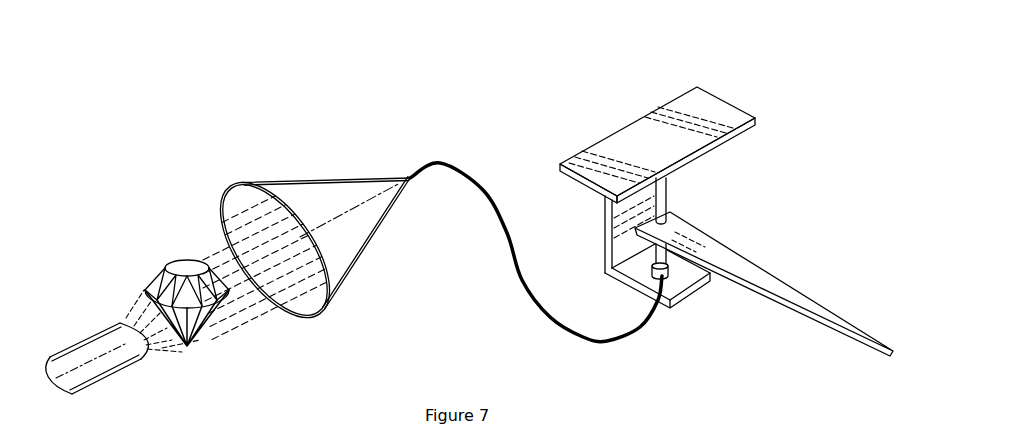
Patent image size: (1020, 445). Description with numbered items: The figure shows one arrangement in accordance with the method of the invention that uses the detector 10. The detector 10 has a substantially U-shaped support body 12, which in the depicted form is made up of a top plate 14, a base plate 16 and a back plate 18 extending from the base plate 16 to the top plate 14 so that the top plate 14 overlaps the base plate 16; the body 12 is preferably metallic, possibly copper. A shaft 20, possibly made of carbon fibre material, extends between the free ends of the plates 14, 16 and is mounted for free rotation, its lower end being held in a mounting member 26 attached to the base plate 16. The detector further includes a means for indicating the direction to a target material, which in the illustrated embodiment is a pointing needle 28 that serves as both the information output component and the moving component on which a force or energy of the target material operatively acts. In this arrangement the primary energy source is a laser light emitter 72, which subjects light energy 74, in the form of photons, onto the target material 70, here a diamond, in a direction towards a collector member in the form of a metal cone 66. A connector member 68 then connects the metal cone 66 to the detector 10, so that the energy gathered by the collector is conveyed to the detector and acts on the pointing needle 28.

The detector 10 is at (797, 136).
The support body 12 is at (613, 80).
The top plate 14 is at (700, 108).
The base plate 16 is at (642, 268).
The back plate 18 is at (620, 214).
The shaft 20 is at (665, 192).
The mounting member 26 is at (672, 270).
The pointing needle 28 is at (753, 270).
The metal cone 66 is at (325, 190).
The connector member 68 is at (457, 165).
The target material 70 is at (177, 268).
The laser light emitter 72 is at (105, 372).
The light energy 74 is at (165, 347).